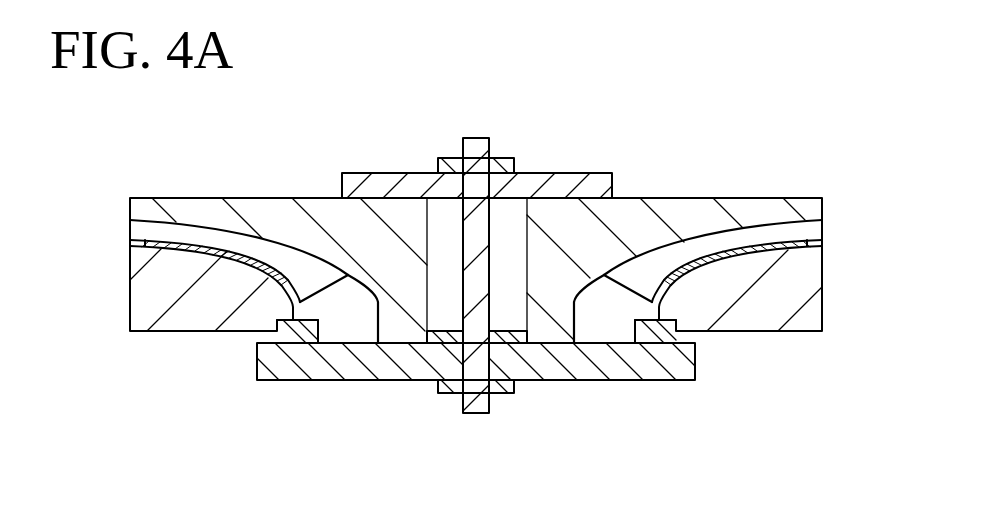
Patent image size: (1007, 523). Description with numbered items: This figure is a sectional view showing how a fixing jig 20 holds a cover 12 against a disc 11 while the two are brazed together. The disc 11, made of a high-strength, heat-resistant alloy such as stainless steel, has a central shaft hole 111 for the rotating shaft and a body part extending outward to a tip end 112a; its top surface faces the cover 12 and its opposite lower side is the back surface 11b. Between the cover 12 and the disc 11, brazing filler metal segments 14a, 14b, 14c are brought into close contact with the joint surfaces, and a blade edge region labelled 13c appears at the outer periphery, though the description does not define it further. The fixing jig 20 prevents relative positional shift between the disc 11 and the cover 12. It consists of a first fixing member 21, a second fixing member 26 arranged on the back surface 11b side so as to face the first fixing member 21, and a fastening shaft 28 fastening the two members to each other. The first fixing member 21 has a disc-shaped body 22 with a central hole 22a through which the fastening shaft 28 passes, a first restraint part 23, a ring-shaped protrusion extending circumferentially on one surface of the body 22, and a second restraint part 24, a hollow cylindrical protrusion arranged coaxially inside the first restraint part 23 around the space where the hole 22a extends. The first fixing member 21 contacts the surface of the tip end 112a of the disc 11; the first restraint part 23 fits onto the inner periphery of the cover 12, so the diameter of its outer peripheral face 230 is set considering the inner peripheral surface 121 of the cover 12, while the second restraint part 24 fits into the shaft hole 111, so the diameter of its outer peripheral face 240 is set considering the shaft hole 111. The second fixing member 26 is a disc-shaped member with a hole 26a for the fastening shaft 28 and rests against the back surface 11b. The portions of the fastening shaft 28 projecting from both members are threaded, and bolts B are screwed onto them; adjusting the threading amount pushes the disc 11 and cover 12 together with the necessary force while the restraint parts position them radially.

The disc 11 is at (699, 190).
The back surface 11b is at (661, 302).
The cover 12 is at (772, 333).
The blade outer end 13c is at (130, 242).
The brazing filler metal segment 14a is at (177, 222).
The brazing filler metal segment 14b is at (222, 246).
The brazing filler metal segment 14c is at (293, 262).
The fixing jig 20 is at (387, 145).
The first fixing member 21 is at (606, 392).
The body 22 is at (492, 372).
The hole 22a is at (472, 414).
The first restraint part 23 is at (318, 333).
The outer peripheral face 230 is at (276, 334).
The second restraint part 24 is at (499, 331).
The outer peripheral face 240 is at (428, 272).
The second fixing member 26 is at (573, 173).
The hole 26a is at (470, 188).
The fastening shaft 28 is at (495, 250).
The shaft hole 111 is at (426, 333).
The tip end 112a is at (553, 348).
The inner peripheral surface 121 is at (297, 310).
The bolt B is at (447, 173).